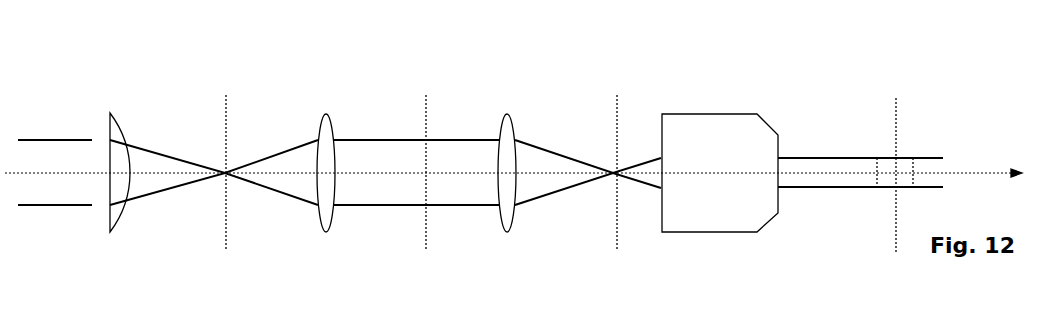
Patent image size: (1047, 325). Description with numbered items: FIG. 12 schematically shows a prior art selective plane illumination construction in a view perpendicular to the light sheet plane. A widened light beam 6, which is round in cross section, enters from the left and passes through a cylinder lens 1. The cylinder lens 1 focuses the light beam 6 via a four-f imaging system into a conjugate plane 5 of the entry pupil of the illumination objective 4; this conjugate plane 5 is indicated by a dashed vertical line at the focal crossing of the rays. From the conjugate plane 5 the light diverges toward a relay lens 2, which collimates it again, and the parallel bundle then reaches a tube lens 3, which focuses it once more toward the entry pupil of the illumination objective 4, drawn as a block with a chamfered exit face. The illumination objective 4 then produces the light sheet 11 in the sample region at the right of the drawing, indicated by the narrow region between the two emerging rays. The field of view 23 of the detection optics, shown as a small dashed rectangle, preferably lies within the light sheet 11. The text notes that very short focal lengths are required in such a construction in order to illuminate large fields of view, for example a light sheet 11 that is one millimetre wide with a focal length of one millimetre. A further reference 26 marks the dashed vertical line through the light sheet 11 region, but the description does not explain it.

The widened light beam 6 is at (52, 193).
The cylinder lens 1 is at (104, 216).
The conjugate plane 5 is at (224, 230).
The relay lens 2 is at (323, 217).
The tube lens 3 is at (503, 217).
The illumination objective 4 is at (690, 233).
The light sheet 11 is at (877, 158).
The field of view 23 is at (912, 160).
The focal plane 26 is at (900, 98).